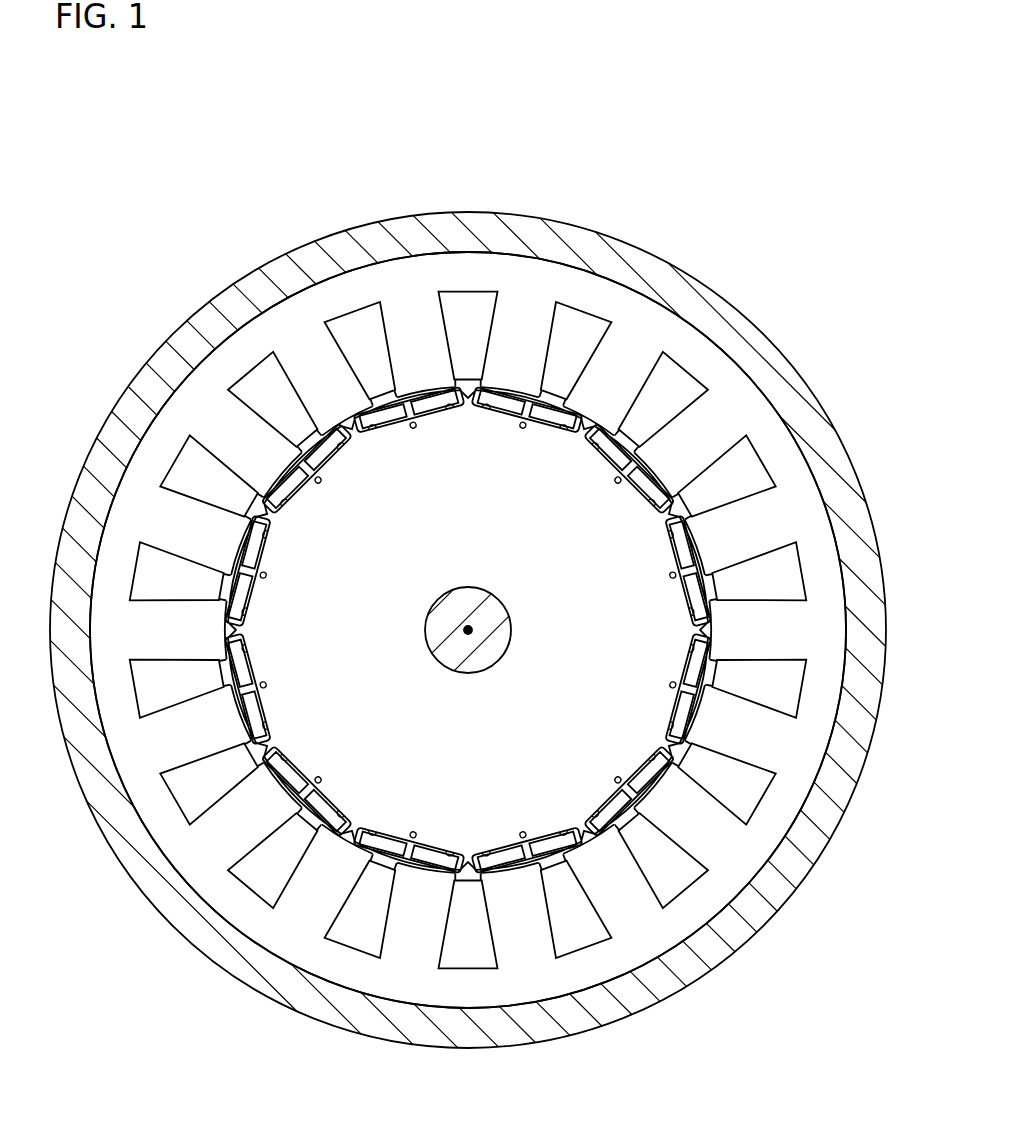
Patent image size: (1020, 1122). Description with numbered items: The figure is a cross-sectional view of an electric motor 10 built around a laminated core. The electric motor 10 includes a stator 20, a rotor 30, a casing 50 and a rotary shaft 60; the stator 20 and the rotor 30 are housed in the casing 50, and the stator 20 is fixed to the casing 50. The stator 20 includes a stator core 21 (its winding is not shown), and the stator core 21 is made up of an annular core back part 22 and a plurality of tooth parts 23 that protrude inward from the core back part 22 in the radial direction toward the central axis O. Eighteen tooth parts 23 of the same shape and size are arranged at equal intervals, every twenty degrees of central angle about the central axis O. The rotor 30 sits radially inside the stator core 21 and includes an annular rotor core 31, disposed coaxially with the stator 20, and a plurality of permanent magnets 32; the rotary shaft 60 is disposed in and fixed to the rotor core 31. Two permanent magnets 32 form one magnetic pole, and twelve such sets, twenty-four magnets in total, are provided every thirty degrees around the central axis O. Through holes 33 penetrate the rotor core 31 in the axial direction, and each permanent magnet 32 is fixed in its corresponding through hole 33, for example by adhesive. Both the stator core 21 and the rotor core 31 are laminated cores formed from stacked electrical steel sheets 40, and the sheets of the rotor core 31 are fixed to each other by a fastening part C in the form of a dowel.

The electric motor 10 is at (778, 112).
The stator 20 is at (768, 368).
The stator core 21 is at (693, 176).
The core back part 22 is at (660, 325).
The tooth parts 23 is at (613, 348).
The rotor 30 is at (413, 633).
The rotor core 31 is at (367, 815).
The permanent magnets 32 is at (540, 426).
The through holes 33 is at (492, 860).
The electrical steel sheets 40 is at (249, 340).
The casing 50 is at (812, 417).
The rotary shaft 60 is at (500, 645).
The central axis O is at (470, 628).
The fastening part C is at (322, 483).